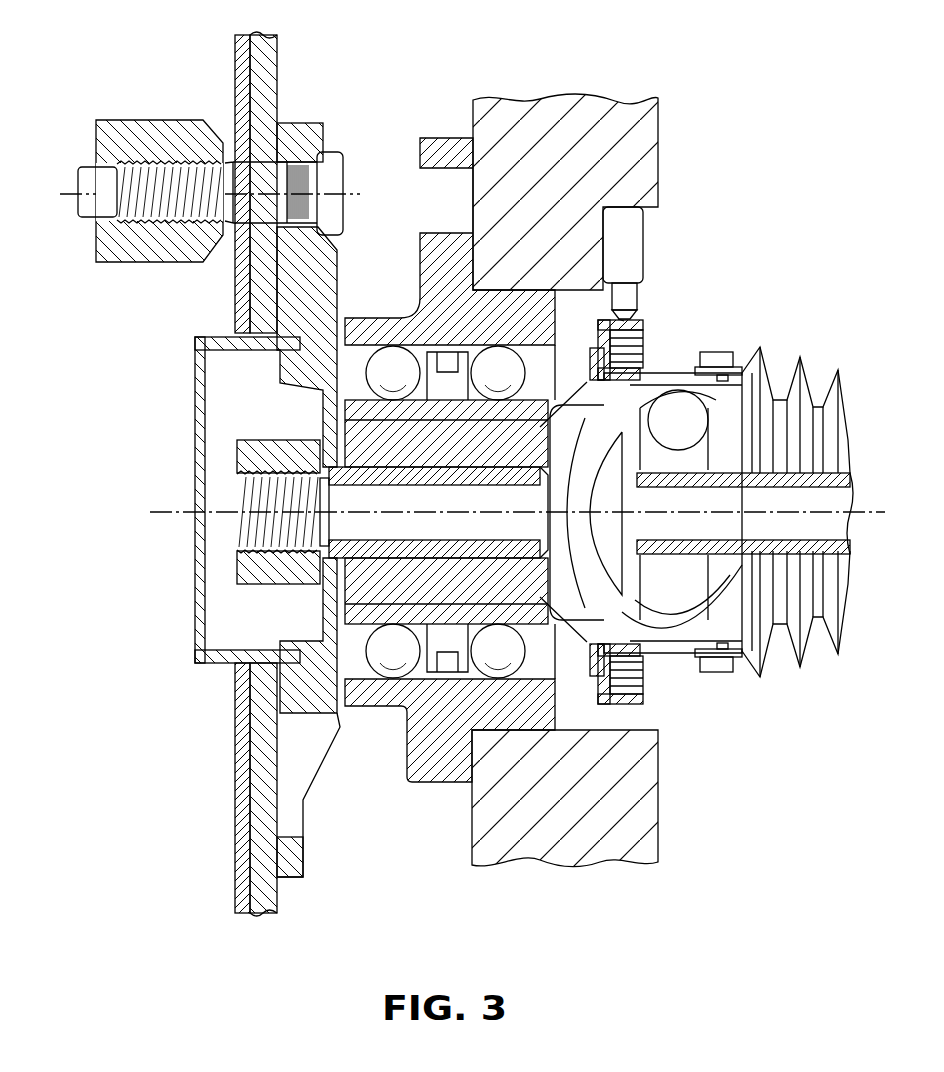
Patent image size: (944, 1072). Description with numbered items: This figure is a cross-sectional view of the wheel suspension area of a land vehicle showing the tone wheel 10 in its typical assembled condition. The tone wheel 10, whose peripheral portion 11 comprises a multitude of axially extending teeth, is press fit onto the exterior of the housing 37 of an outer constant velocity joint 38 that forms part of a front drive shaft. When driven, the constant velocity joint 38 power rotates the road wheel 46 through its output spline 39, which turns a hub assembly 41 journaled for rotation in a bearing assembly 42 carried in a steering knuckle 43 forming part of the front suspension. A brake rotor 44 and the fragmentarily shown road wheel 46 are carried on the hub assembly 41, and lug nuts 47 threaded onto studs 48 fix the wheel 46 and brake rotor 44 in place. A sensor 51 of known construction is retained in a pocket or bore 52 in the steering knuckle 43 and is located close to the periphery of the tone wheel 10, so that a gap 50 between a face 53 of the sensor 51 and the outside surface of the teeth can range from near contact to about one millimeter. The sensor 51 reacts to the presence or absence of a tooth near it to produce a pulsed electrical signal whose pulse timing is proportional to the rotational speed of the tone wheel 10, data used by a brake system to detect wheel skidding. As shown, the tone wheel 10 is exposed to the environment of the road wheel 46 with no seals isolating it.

The tone wheel 10 is at (657, 333).
The peripheral portion 11 is at (632, 713).
The housing 37 is at (667, 373).
The outer constant velocity joint 38 is at (735, 358).
The output spline 39 is at (373, 557).
The hub assembly 41 is at (318, 420).
The bearing assembly 42 is at (388, 313).
The steering knuckle 43 is at (533, 110).
The brake rotor 44 is at (277, 73).
The road wheel 46 is at (240, 65).
The lug nuts 47 is at (140, 118).
The studs 48 is at (93, 177).
The gap 50 is at (632, 317).
The sensor 51 is at (637, 240).
The pocket or bore 52 is at (653, 222).
The face 53 is at (607, 320).